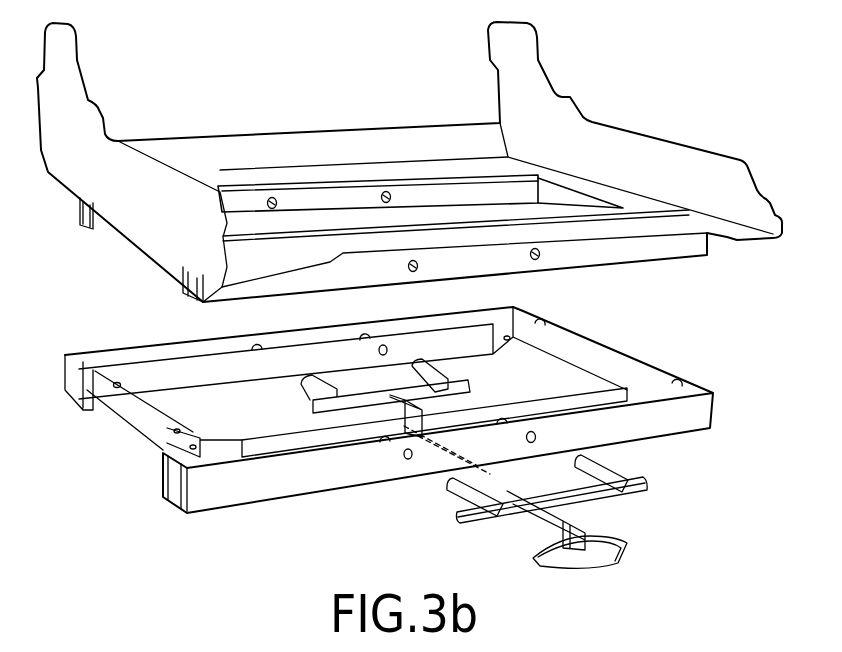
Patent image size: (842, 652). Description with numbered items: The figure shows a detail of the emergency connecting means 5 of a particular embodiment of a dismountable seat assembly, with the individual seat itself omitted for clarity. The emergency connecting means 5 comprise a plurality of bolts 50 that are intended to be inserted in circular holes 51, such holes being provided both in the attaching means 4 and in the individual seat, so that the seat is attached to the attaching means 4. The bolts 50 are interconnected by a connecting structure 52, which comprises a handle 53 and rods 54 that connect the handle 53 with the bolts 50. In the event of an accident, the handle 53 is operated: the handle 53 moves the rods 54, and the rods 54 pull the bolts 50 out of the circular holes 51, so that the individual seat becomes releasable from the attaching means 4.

The attaching means 4 is at (228, 499).
The emergency connecting means 5 is at (603, 252).
The bolts 50 is at (612, 486).
The circular holes 51 is at (537, 436).
The connecting structure 52 is at (525, 527).
The handle 53 is at (597, 566).
The rods 54 is at (455, 513).